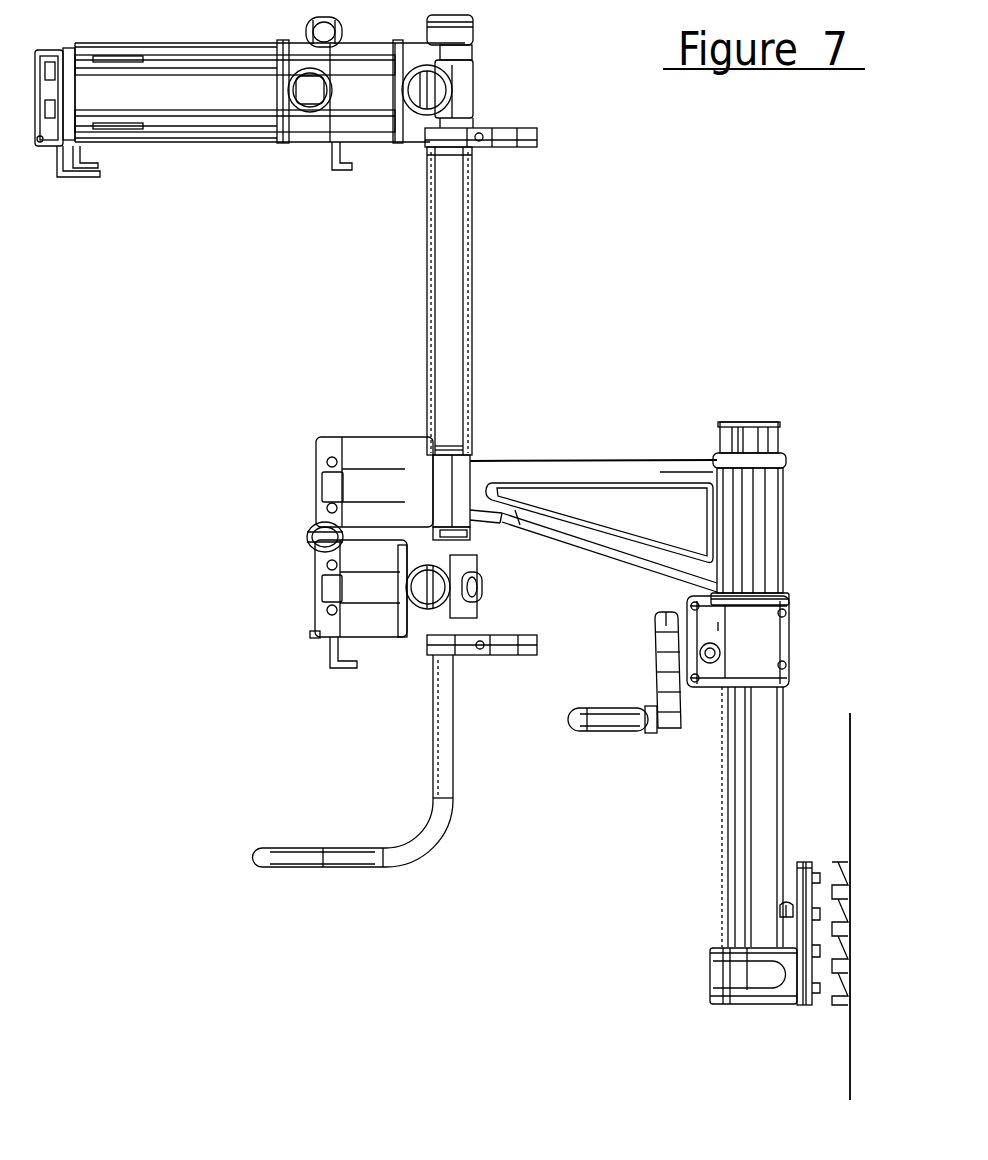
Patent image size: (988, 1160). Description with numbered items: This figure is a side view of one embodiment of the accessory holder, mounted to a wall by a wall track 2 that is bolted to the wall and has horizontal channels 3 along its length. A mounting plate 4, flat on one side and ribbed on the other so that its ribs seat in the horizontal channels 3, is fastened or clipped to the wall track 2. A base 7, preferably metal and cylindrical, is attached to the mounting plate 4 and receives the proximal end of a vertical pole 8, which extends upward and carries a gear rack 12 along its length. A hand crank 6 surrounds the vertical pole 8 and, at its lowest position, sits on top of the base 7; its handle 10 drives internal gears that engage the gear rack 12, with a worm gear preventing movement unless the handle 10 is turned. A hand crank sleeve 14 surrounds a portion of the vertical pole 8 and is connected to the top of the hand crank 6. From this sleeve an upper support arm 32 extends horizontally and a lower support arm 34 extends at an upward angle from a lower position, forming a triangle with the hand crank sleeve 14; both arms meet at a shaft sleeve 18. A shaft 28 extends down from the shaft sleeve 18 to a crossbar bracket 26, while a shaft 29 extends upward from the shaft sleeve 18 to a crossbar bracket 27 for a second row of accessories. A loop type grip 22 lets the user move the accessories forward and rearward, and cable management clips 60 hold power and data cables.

The wall track 2 is at (847, 1002).
The horizontal channels 3 is at (833, 940).
The mounting plate 4 is at (808, 1003).
The hand crank 6 is at (768, 645).
The base 7 is at (773, 997).
The vertical pole 8 is at (760, 842).
The handle 10 is at (608, 728).
The gear rack 12 is at (722, 794).
The hand crank sleeve 14 is at (767, 538).
The shaft sleeve 18 is at (472, 460).
The grip 22 is at (403, 857).
The crossbar bracket 26 is at (467, 565).
The crossbar bracket 27 is at (467, 85).
The shaft 28 is at (463, 543).
The shaft 29 is at (460, 268).
The upper support arm 32 is at (664, 463).
The lower support arm 34 is at (622, 555).
The cable management clips 60 is at (283, 145).